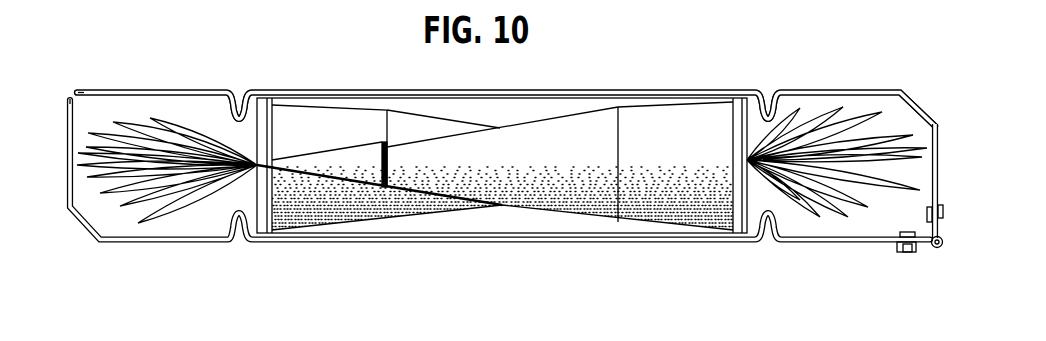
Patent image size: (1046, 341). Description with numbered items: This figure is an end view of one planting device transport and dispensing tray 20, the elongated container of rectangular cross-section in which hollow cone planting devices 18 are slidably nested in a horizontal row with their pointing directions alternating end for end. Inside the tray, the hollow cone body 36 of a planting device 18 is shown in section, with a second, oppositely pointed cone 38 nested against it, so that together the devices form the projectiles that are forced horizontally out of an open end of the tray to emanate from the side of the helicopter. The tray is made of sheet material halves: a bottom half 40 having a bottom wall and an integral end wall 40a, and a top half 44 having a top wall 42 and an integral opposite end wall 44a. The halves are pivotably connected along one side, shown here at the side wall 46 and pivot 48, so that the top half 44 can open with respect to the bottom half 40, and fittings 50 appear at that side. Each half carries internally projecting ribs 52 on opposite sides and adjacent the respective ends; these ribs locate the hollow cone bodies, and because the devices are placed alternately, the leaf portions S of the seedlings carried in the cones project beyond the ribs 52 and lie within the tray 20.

The planting device 18 is at (525, 200).
The planting device transport and dispensing tray 20 is at (658, 250).
The tube 36 is at (610, 242).
The inner cone 38 is at (560, 242).
The container 40 is at (69, 150).
The container end 40a is at (69, 97).
The top wall 42 is at (390, 88).
The lid 44 is at (312, 90).
The lid end 44a is at (73, 90).
The door 46 is at (938, 157).
The hinge 48 is at (960, 229).
The latch 50 is at (943, 210).
The groove 52 is at (236, 104).
The streamers S is at (195, 197).